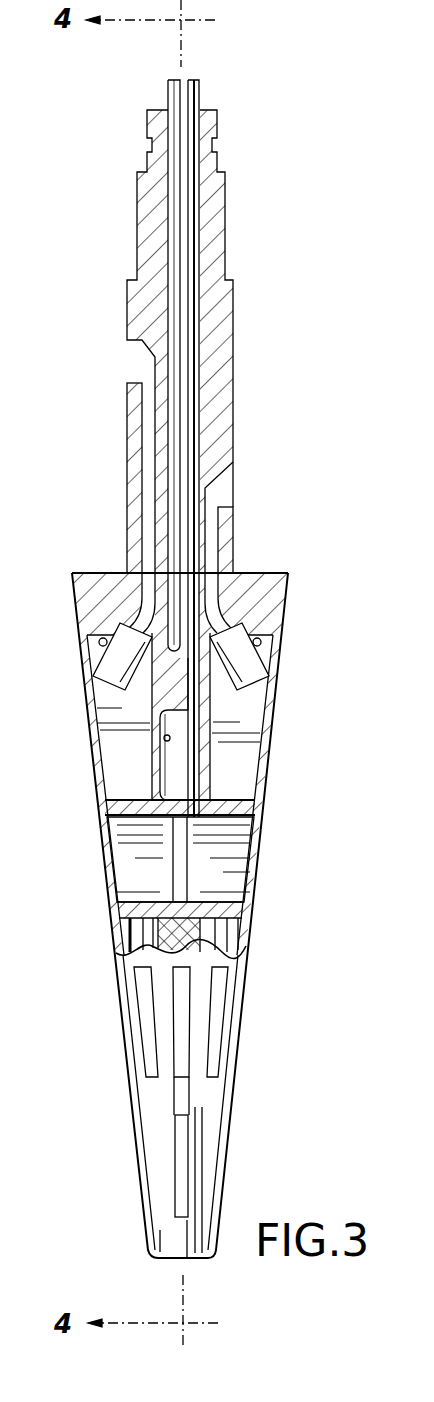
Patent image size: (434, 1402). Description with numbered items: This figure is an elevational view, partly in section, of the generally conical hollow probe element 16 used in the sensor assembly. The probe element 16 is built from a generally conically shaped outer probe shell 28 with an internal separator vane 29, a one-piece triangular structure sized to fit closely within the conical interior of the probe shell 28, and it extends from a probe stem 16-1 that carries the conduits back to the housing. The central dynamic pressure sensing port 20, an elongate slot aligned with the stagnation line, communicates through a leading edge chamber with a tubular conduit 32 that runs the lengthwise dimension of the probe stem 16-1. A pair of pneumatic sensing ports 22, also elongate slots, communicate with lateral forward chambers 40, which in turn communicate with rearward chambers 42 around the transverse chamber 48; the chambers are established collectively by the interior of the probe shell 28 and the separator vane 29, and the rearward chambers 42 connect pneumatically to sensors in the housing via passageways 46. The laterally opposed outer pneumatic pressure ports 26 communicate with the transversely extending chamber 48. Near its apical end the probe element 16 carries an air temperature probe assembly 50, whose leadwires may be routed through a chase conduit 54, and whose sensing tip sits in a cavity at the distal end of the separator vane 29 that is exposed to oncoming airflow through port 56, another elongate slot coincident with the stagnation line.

The probe stem 16-1 is at (217, 213).
The tubular conduit 32 is at (172, 222).
The air temperature probe assembly 50 is at (196, 257).
The passageways 46 is at (152, 487).
The outer probe shell 28 is at (278, 683).
The rearward chambers 42 is at (141, 785).
The separator vane 29 is at (234, 796).
The outer pneumatic pressure ports 26 is at (105, 840).
The transverse chamber 48 is at (146, 890).
The chase conduit 54 is at (180, 853).
The lateral forward chambers 40 is at (140, 937).
The probe element 16 is at (280, 1058).
The pneumatic sensing ports 22 is at (140, 1038).
The central dynamic pressure sensing port 20 is at (180, 1060).
The port 56 is at (180, 1173).